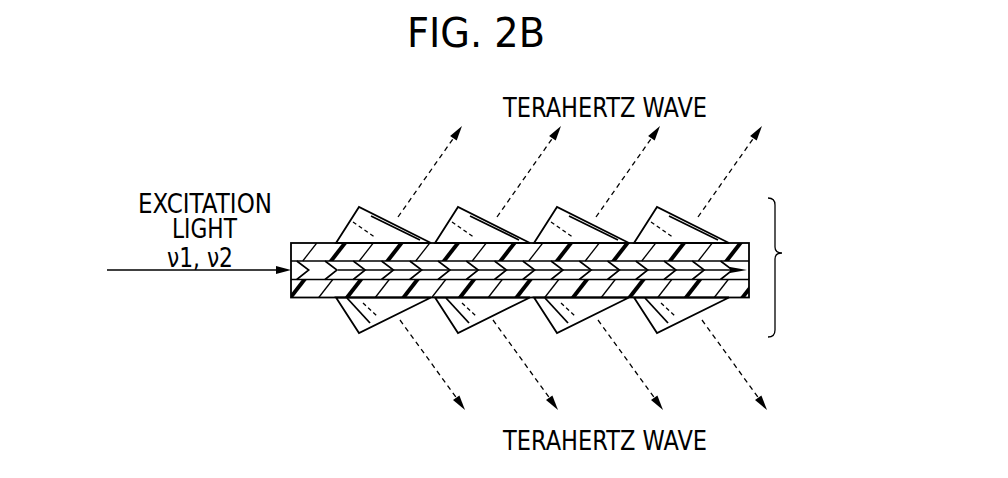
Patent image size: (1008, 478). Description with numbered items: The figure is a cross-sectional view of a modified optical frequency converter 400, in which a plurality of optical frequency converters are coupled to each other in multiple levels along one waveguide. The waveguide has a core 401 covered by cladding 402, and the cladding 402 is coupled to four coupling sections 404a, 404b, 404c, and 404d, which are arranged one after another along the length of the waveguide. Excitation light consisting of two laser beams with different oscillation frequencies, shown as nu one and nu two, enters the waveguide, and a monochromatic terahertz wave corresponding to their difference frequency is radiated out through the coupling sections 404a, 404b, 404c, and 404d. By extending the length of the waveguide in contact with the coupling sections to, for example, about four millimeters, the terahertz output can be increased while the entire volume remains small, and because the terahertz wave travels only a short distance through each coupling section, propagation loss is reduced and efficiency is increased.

The optical frequency converter 400 is at (558, 267).
The core 401 is at (313, 256).
The cladding 402 is at (313, 292).
The coupling section 404a is at (378, 327).
The coupling section 404b is at (485, 223).
The coupling section 404c is at (591, 317).
The coupling section 404d is at (693, 223).